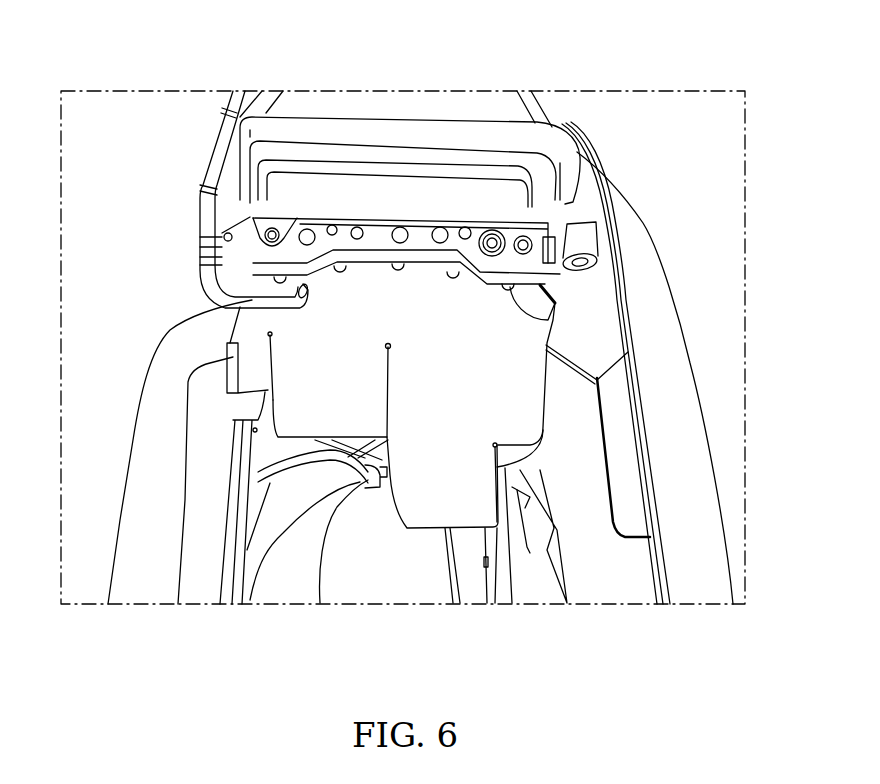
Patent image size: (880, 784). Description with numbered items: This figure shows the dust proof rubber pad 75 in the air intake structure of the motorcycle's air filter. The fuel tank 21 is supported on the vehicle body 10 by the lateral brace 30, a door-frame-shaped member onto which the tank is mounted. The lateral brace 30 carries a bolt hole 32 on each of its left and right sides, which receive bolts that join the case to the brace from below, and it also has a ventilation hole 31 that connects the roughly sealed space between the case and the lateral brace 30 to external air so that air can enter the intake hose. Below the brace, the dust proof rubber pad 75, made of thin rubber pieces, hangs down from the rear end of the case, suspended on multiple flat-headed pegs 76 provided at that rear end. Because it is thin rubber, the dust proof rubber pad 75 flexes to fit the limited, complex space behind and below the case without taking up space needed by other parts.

The vehicle body 10 is at (155, 453).
The fuel tank 21 is at (481, 100).
The lateral brace 30 is at (388, 220).
The ventilation hole 31 is at (309, 229).
The bolt hole 32 is at (274, 228).
The dust proof rubber pad 75 is at (447, 412).
The flat-headed peg 76 is at (556, 322).